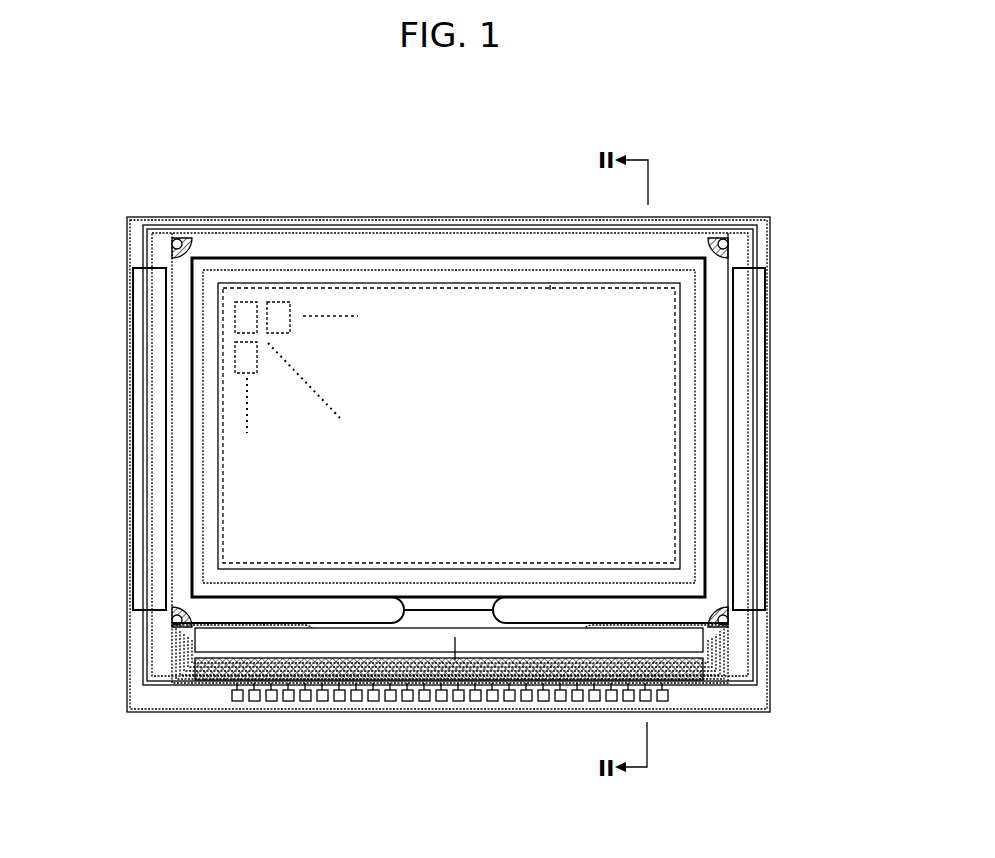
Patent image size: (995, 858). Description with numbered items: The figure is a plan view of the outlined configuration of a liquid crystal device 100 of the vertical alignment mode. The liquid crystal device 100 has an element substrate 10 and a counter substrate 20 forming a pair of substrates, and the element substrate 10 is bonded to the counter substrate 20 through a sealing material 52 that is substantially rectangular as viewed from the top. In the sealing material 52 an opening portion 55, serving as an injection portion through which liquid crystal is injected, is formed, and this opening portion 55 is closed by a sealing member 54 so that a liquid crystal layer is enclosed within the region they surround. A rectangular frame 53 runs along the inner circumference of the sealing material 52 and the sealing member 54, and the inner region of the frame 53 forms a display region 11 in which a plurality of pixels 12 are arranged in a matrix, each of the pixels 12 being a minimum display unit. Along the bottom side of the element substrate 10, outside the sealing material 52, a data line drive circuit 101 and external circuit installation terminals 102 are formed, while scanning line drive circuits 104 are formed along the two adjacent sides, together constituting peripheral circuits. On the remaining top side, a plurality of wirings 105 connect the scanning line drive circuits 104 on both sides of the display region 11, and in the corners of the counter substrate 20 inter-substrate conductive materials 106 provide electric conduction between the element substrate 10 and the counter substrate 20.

The liquid crystal device 100 is at (603, 112).
The element substrate 10 is at (357, 217).
The counter substrate 20 is at (427, 250).
The wirings 105 is at (247, 224).
The inter-substrate conductive materials 106 is at (174, 236).
The scanning line drive circuits 104 is at (150, 431).
The sealing material 52 is at (712, 386).
The frame 53 is at (688, 350).
The display region 11 is at (550, 285).
The pixels 12 is at (291, 323).
The data line drive circuit 101 is at (238, 645).
The external circuit installation terminals 102 is at (302, 702).
The sealing member 54 is at (450, 622).
The opening portion 55 is at (492, 614).